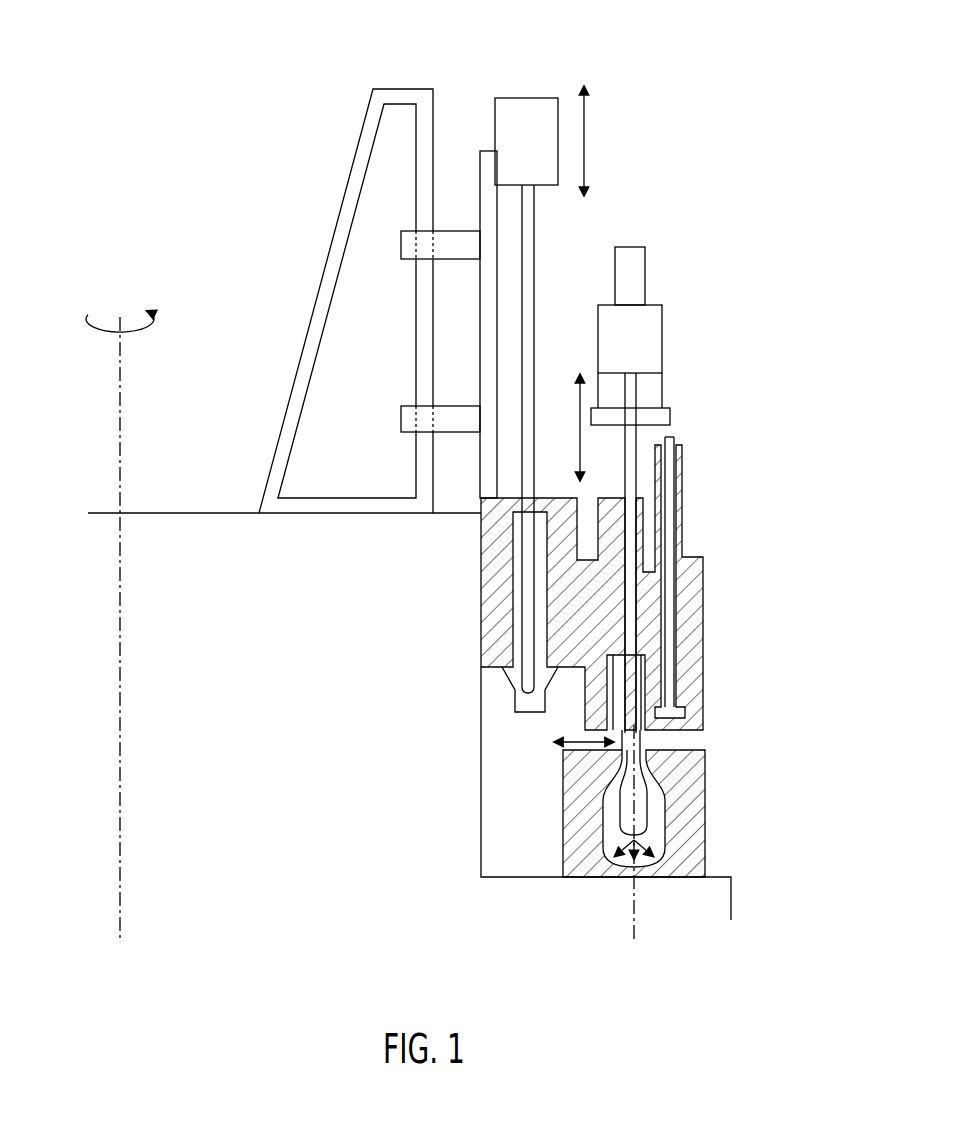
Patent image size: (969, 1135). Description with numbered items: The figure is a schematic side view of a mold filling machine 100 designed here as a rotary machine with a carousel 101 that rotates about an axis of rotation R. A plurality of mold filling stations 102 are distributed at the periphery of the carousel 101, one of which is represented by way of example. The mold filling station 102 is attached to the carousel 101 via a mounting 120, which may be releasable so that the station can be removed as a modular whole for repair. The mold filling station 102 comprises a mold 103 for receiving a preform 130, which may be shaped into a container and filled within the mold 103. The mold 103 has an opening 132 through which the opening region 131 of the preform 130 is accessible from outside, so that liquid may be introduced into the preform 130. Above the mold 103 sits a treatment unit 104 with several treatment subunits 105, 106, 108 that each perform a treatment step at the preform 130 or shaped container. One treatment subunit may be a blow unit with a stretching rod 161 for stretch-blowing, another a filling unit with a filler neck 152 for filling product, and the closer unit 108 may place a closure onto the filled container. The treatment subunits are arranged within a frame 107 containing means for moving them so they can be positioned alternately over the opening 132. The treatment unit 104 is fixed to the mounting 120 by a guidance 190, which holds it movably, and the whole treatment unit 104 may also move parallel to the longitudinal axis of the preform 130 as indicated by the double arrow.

The mold filling machine 100 is at (248, 252).
The carousel 101 is at (212, 513).
The mold filling station 102 is at (750, 315).
The mold 103 is at (705, 852).
The treatment unit 104 is at (697, 192).
The treatment subunit 105 is at (690, 312).
The treatment subunit 106 is at (573, 232).
The frame 107 is at (738, 597).
The closer unit 108 is at (684, 467).
The mounting 120 is at (398, 89).
The preform 130 is at (648, 793).
The opening region 131 is at (647, 738).
The opening 132 is at (607, 729).
The filler neck 152 is at (640, 426).
The stretching rod 161 is at (534, 275).
The guidance 190 is at (401, 406).